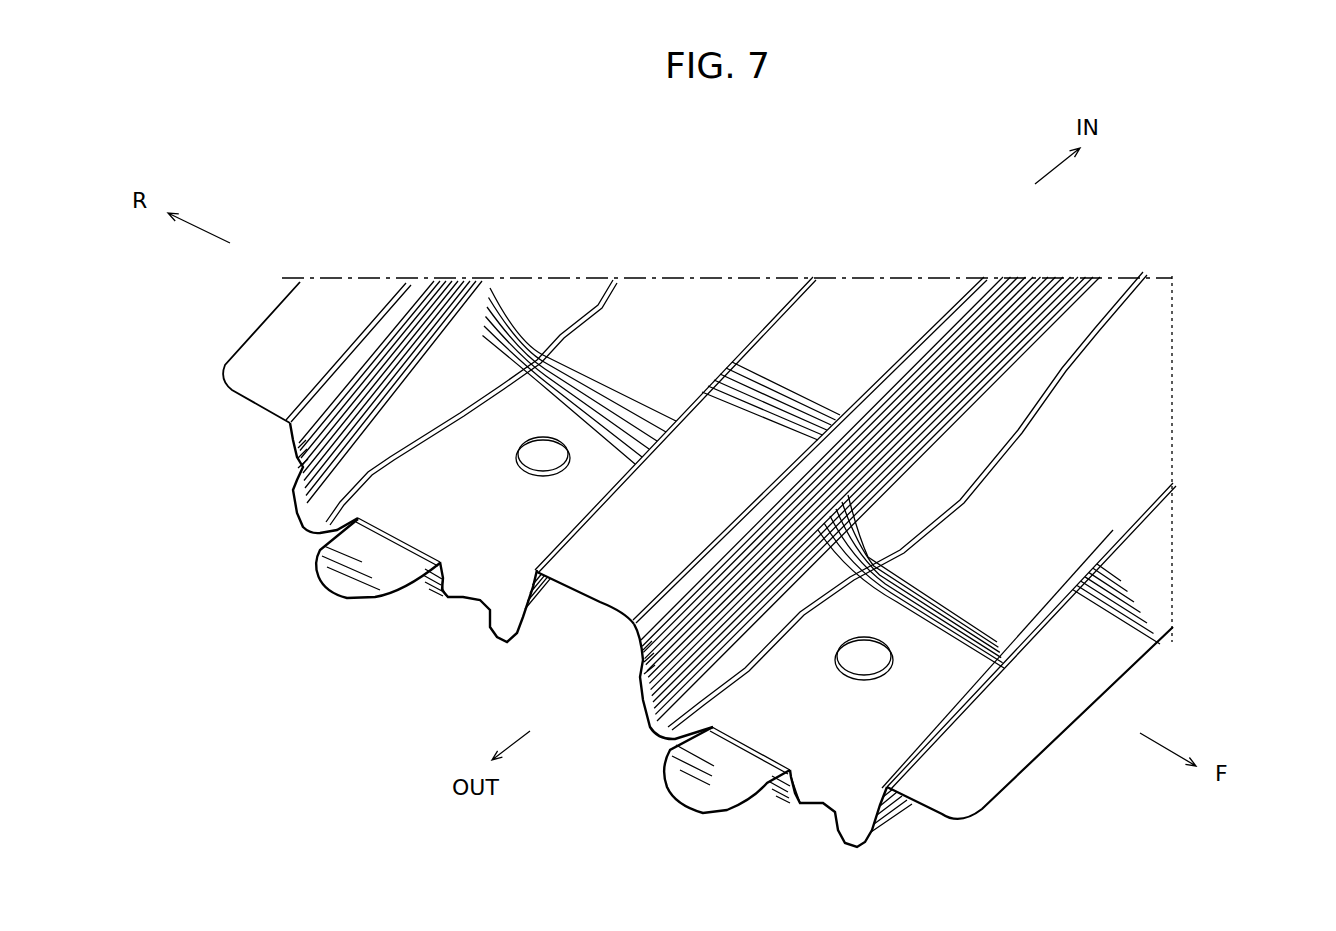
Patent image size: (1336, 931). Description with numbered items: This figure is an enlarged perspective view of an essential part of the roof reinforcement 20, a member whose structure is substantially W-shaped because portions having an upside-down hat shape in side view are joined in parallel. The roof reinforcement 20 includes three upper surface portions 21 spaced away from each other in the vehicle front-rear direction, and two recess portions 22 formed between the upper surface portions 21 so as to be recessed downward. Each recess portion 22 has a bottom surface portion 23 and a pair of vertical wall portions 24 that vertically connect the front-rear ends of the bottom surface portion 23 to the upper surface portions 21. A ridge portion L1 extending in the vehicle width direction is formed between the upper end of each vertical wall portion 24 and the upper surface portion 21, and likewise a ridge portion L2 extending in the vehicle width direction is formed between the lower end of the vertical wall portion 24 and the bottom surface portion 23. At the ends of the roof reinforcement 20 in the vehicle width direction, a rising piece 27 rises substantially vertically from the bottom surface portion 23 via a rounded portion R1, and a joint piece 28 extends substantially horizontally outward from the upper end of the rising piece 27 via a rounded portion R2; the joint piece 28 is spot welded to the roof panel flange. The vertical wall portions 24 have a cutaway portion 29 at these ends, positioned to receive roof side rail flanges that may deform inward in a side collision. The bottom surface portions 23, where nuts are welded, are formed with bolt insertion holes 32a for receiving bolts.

The roof reinforcement 20 is at (1232, 387).
The upper surface portion 21 is at (262, 357).
The recess portion 22 is at (659, 264).
The bottom surface portion 23 is at (665, 345).
The vertical wall portion 24 is at (455, 276).
The rising piece 27 is at (447, 568).
The joint piece 28 is at (352, 575).
The cutaway portion 29 is at (300, 460).
The bolt insertion hole 32a is at (566, 466).
The ridge portion L1 is at (380, 302).
The ridge portion L2 is at (578, 318).
The rounded portion R1 is at (433, 587).
The rounded portion R2 is at (398, 527).